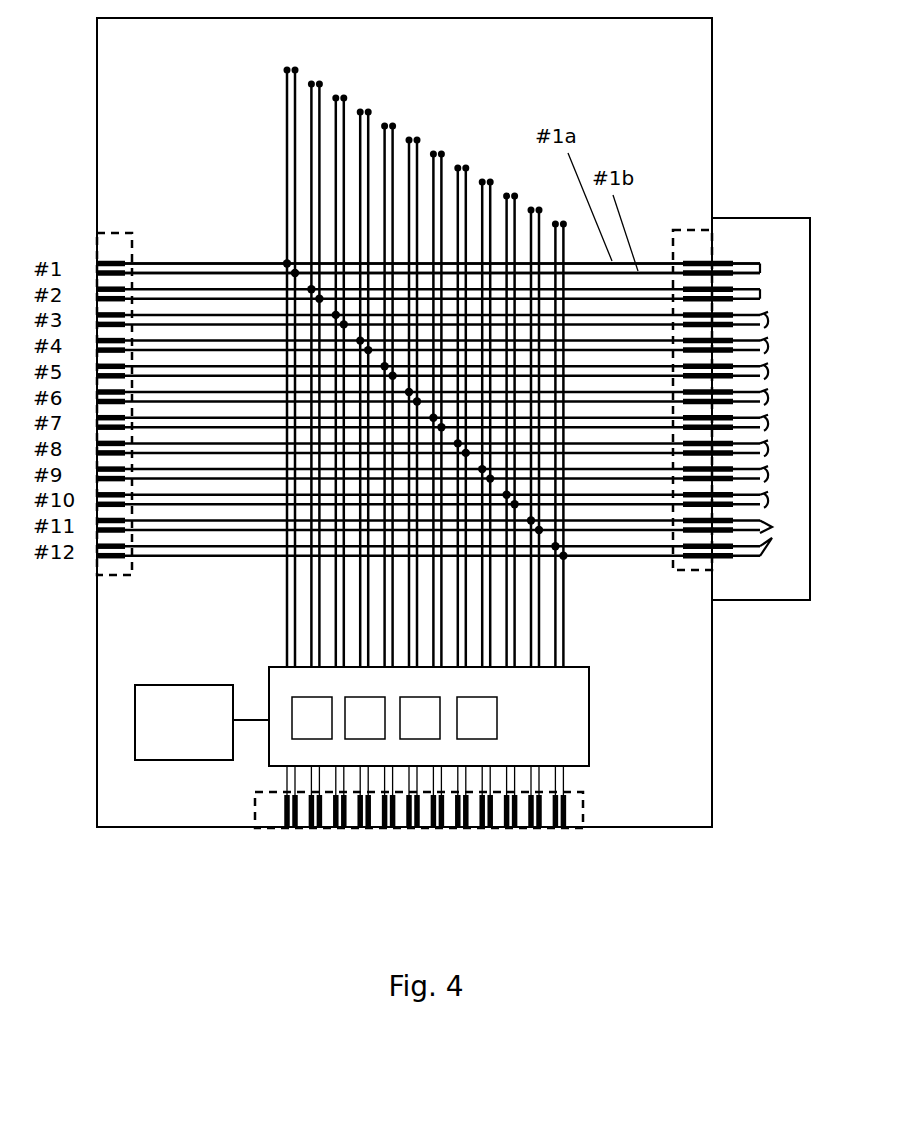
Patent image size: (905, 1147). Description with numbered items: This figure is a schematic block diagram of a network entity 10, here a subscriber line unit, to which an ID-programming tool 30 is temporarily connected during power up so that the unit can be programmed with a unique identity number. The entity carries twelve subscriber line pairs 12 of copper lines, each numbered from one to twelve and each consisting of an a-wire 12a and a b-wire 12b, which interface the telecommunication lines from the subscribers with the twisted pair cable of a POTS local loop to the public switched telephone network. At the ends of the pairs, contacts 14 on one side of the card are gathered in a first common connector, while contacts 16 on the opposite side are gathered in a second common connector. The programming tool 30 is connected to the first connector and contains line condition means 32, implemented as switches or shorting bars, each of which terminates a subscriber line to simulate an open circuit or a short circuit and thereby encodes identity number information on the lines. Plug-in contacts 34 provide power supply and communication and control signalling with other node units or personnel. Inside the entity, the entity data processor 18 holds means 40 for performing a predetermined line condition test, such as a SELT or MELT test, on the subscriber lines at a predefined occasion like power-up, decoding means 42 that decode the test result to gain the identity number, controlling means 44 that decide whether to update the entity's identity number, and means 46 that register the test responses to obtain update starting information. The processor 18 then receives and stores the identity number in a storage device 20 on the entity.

The network entity 10 is at (125, 64).
The subscriber line pair 12 is at (153, 557).
The a-wire 12a is at (207, 262).
The b-wire 12b is at (222, 272).
The contacts 14 is at (688, 230).
The contacts 16 is at (108, 232).
The entity data processor 18 is at (454, 417).
The storage device 20 is at (171, 735).
The ID-programming tool 30 is at (777, 594).
The line condition means 32 is at (765, 307).
The plug-in contacts 34 is at (265, 831).
The means for performing line condition test 40 is at (312, 718).
The decoding means 42 is at (365, 718).
The controlling means 44 is at (420, 718).
The means for registering responses 46 is at (477, 718).